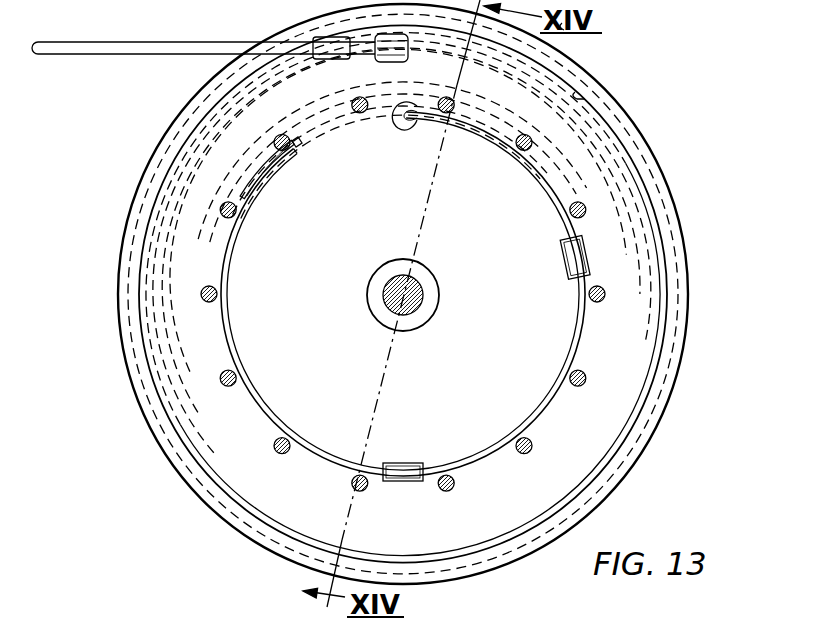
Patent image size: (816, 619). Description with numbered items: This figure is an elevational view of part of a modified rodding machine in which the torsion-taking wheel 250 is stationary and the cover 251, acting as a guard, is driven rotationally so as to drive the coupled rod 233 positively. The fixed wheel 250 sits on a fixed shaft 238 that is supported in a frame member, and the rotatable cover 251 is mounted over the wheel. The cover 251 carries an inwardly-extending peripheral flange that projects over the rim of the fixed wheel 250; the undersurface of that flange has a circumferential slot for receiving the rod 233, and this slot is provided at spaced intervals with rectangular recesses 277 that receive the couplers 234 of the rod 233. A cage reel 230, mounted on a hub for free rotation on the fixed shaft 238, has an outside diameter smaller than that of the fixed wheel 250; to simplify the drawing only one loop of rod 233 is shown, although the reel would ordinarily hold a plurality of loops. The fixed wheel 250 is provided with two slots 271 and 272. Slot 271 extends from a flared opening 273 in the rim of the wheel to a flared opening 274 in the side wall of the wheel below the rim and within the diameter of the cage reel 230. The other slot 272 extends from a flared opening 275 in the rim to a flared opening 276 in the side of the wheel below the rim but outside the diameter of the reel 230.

The cage reel 230 is at (587, 212).
The rod 233 is at (233, 333).
The couplers 234 is at (589, 266).
The fixed shaft 238 is at (418, 296).
The torsion-taking wheel 250 is at (212, 422).
The cover 251 is at (210, 498).
The slot 271 is at (328, 128).
The slot 272 is at (580, 98).
The flared opening 273 is at (158, 196).
The flared opening 274 is at (412, 124).
The flared opening 275 is at (662, 330).
The flared opening 276 is at (354, 56).
The rectangular recesses 277 is at (556, 47).